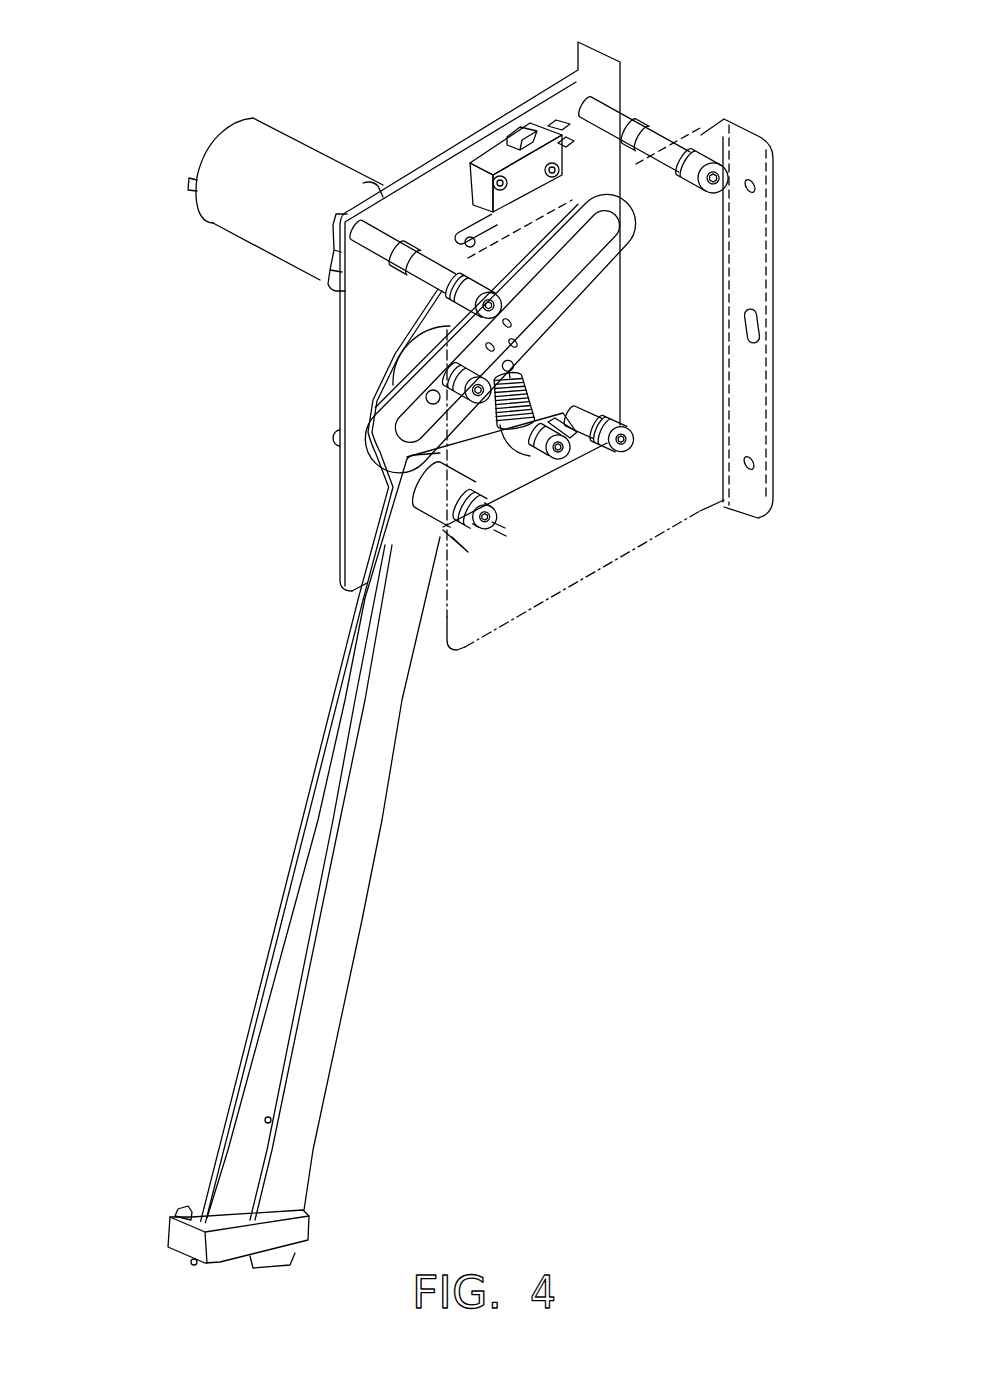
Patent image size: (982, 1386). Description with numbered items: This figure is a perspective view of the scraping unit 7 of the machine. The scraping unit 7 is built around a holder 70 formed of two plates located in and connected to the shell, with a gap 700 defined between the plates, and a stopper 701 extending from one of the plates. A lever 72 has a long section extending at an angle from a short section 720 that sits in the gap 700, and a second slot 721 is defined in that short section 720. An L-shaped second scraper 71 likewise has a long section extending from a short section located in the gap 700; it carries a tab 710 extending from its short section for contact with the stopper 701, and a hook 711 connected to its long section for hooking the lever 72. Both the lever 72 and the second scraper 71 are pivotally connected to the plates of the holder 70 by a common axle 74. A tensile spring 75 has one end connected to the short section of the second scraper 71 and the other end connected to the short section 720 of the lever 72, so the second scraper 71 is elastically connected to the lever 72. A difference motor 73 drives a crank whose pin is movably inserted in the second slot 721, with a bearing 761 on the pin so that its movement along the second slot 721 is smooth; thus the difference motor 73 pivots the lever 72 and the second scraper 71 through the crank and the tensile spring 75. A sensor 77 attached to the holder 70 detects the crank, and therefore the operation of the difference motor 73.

The scraping unit 7 is at (465, 646).
The holder 70 is at (552, 572).
The gap 700 is at (653, 112).
The stopper 701 is at (613, 405).
The tab 710 is at (580, 432).
The second scraper 71 is at (320, 1034).
The hook 711 is at (180, 1232).
The lever 72 is at (280, 1000).
The second slot 721 is at (404, 455).
The difference motor 73 is at (222, 165).
The axle 74 is at (430, 503).
The tensile spring 75 is at (530, 393).
The bearing 761 is at (448, 322).
The sensor 77 is at (500, 153).
The short section 720 is at (598, 268).